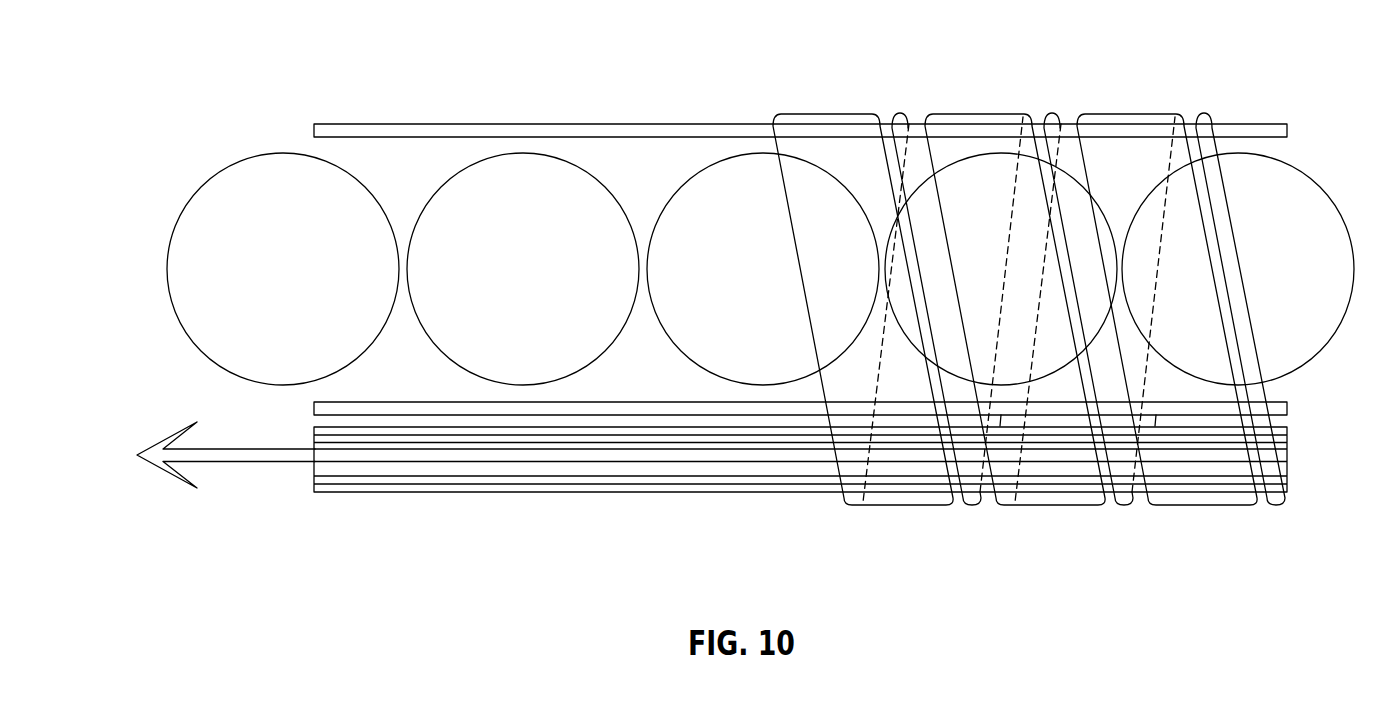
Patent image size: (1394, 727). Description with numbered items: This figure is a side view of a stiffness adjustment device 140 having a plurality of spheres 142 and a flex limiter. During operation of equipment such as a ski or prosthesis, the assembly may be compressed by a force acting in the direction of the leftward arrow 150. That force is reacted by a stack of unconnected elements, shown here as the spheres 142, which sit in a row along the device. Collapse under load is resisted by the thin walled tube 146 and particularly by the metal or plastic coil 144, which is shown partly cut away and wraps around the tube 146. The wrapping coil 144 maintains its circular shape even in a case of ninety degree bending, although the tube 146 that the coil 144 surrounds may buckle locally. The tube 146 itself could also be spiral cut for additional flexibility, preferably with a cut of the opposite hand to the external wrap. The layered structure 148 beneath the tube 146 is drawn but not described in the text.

The stiffness adjustment device 140 is at (528, 84).
The spheres 142 is at (468, 192).
The coil 144 is at (833, 115).
The thin walled tube 146 is at (379, 402).
The layered substrate 148 is at (545, 478).
The arrow 150 is at (235, 455).